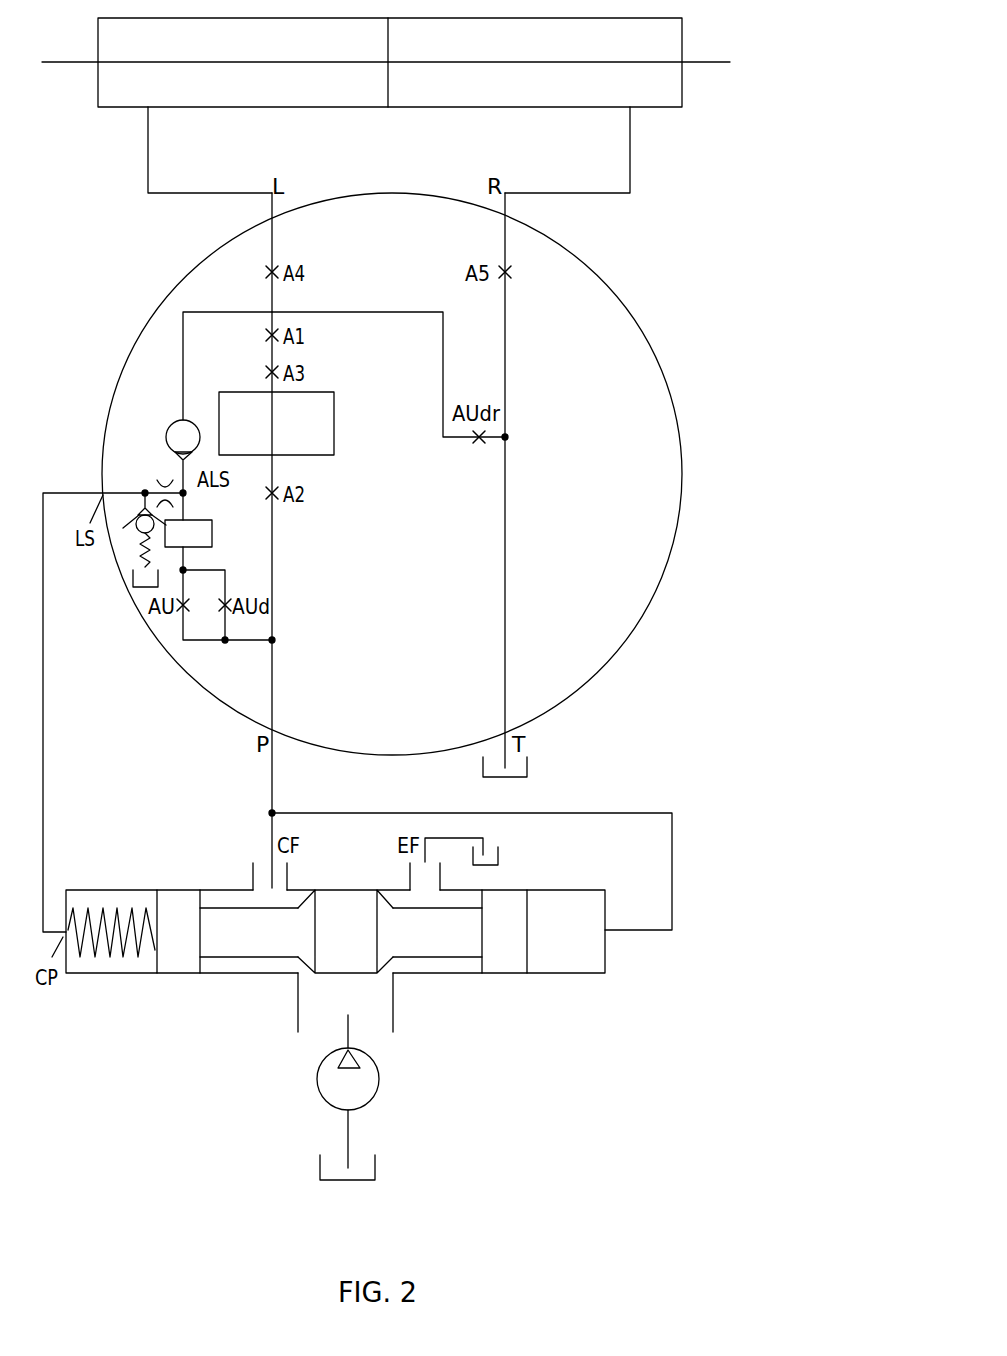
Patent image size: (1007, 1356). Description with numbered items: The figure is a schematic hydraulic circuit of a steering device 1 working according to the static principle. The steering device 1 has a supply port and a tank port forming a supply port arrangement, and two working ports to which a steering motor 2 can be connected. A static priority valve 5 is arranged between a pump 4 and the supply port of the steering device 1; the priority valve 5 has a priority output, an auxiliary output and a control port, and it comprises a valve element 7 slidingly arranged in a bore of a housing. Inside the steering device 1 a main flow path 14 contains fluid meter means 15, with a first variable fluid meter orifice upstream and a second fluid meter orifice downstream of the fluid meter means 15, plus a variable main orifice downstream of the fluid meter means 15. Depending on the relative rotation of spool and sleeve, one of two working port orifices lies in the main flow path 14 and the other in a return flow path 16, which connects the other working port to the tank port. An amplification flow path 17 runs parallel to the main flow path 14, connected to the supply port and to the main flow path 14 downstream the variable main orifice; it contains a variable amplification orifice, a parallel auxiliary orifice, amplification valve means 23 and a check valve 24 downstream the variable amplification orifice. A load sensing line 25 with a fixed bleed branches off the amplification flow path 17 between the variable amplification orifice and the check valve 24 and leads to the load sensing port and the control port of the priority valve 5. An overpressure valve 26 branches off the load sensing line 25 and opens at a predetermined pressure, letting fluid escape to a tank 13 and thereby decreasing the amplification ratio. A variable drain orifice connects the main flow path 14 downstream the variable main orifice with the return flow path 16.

The steering device 1 is at (698, 263).
The steering motor 2 is at (670, 37).
The pump 4 is at (368, 1090).
The static priority valve 5 is at (122, 988).
The valve element 7 is at (332, 960).
The tank 13 is at (140, 588).
The main flow path 14 is at (272, 557).
The fluid meter means 15 is at (335, 409).
The return flow path 16 is at (505, 618).
The amplification flow path 17 is at (183, 383).
The amplification valve means 23 is at (212, 535).
The check valve 24 is at (166, 440).
The load sensing line 25 is at (145, 493).
The overpressure valve 26 is at (128, 540).